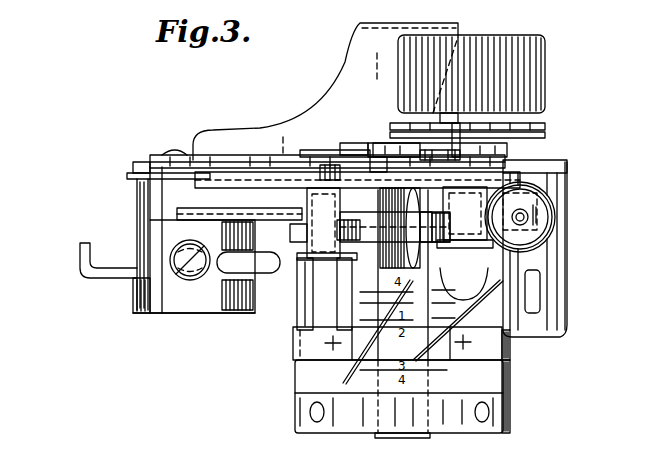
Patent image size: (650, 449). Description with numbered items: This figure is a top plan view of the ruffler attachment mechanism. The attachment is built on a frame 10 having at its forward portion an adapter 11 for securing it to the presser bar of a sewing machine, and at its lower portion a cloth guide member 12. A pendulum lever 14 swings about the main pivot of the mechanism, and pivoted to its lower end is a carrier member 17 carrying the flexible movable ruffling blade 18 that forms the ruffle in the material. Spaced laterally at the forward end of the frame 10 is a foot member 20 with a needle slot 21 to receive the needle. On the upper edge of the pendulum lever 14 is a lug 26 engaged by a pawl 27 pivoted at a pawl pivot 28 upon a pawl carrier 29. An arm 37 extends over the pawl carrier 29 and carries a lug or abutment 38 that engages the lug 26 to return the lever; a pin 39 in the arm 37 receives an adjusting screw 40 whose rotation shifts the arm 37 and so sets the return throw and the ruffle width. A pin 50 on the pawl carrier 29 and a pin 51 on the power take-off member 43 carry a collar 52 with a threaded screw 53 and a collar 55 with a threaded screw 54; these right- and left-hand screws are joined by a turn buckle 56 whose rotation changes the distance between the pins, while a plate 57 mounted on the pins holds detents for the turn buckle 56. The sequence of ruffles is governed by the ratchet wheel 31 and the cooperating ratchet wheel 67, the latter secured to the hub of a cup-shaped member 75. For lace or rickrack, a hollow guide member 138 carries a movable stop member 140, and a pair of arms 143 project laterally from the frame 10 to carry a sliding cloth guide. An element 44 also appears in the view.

The frame 10 is at (245, 167).
The adapter 11 is at (78, 262).
The cloth guide member 12 is at (558, 277).
The pendulum lever 14 is at (565, 162).
The carrier member 17 is at (172, 178).
The movable ruffling blade 18 is at (260, 303).
The foot member 20 is at (148, 313).
The needle slot 21 is at (222, 273).
The lug 26 is at (510, 148).
The pawl 27 is at (470, 135).
The pawl pivot 28 is at (368, 165).
The pawl carrier 29 is at (362, 178).
The ratchet wheel 31 is at (545, 127).
The arm 37 is at (553, 192).
The lug or abutment 38 is at (555, 178).
The pin 39 is at (532, 235).
The adjusting screw 40 is at (543, 218).
The power take-off member 43 is at (287, 180).
The guide 44 is at (337, 180).
The pin 50 is at (465, 244).
The pin 51 is at (325, 270).
The collar 52 is at (423, 332).
The threaded screw 53 is at (397, 333).
The threaded screw 54 is at (352, 250).
The collar 55 is at (320, 233).
The turn buckle 56 is at (395, 157).
The plate 57 is at (387, 243).
The ratchet wheel 67 is at (547, 122).
The cup-shaped member 75 is at (527, 63).
The hollow guide member 138 is at (490, 377).
The stop member 140 is at (488, 350).
The arms 143 is at (297, 337).